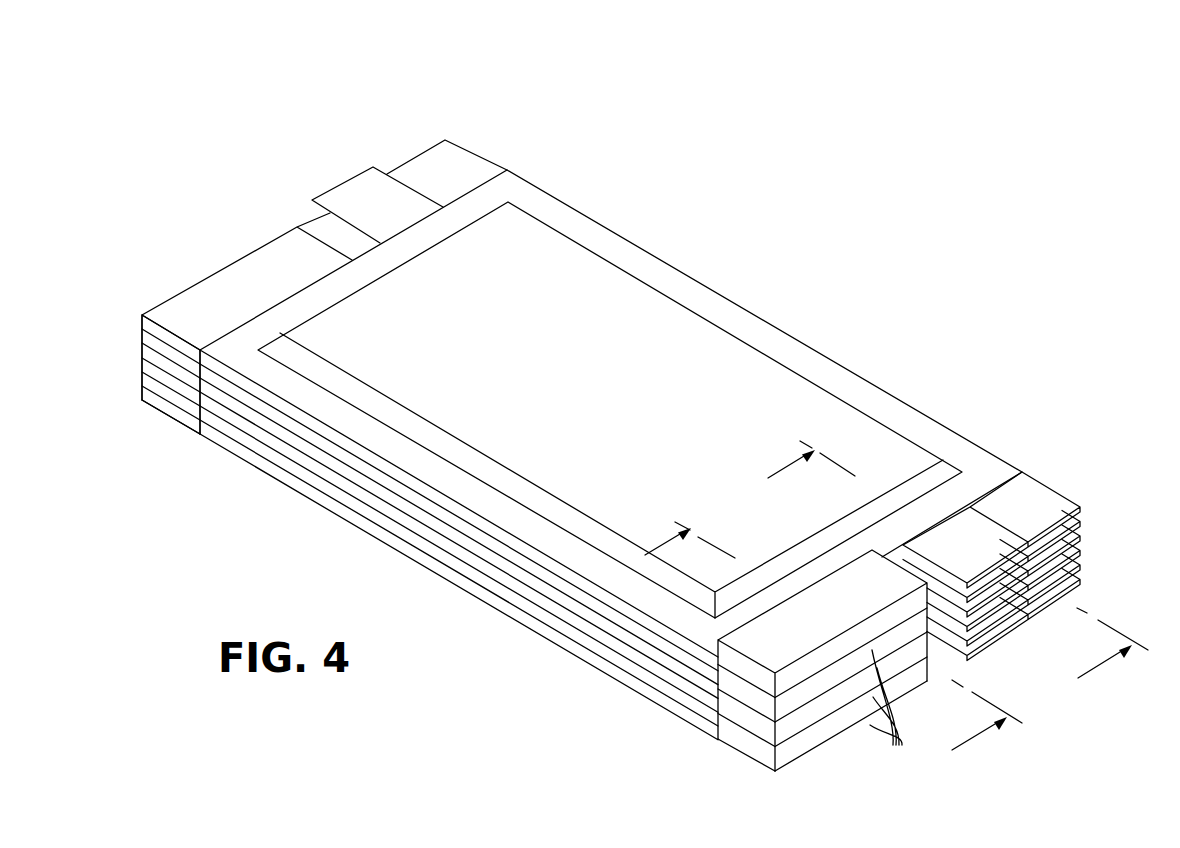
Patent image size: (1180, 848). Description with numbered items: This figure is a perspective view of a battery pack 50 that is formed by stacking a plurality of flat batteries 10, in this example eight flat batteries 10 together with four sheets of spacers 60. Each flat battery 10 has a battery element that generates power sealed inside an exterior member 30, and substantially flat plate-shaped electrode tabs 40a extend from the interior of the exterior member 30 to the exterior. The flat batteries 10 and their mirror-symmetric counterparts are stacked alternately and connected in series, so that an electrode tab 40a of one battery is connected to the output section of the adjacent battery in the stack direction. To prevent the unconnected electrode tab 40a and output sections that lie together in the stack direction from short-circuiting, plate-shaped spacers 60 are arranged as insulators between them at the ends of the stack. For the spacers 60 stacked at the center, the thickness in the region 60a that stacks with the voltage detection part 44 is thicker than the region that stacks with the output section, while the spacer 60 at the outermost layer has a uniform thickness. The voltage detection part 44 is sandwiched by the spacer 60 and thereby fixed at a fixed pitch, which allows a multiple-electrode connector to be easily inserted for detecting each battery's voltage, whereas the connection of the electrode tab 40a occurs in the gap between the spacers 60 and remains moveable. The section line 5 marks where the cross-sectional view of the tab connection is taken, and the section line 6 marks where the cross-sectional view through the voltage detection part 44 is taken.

The battery pack 50 is at (744, 90).
The flat battery 10 is at (750, 278).
The exterior member 30 is at (742, 357).
The electrode tab 40a is at (358, 190).
The spacer 60 is at (177, 265).
The region 60a is at (148, 378).
The voltage detection part 44 is at (894, 706).
The 5-5 line 5 is at (958, 557).
The 6-6 line 6 is at (834, 627).